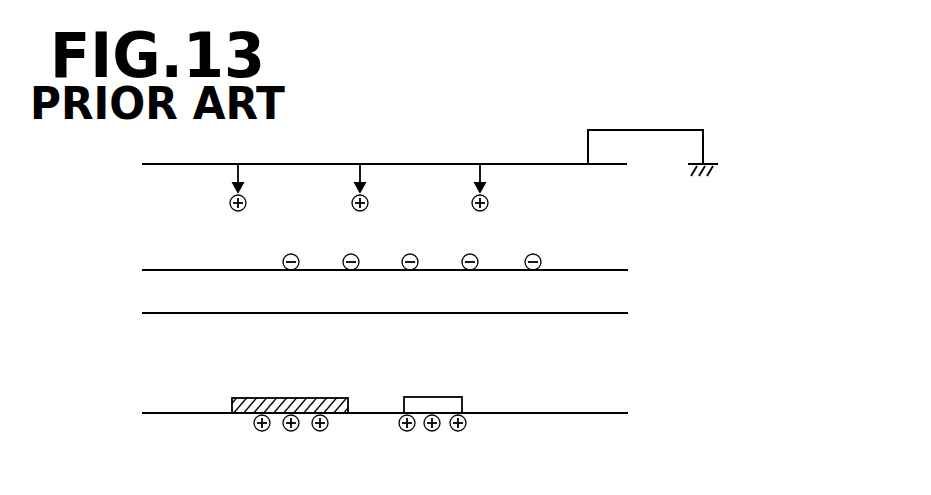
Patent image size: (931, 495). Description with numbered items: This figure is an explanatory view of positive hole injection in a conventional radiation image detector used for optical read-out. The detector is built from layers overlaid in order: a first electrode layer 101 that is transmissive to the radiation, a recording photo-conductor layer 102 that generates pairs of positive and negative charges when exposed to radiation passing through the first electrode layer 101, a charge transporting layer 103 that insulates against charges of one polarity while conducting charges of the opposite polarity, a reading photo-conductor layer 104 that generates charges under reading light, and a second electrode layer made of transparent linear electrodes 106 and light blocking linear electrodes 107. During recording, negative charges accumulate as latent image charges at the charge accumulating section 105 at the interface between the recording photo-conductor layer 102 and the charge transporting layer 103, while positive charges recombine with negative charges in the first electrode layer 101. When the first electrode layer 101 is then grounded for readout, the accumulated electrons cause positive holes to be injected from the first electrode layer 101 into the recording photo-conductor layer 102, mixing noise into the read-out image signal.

The first electrode layer 101 is at (151, 163).
The recording photo-conductor layer 102 is at (152, 201).
The charge transporting layer 103 is at (152, 291).
The reading photo-conductor layer 104 is at (152, 334).
The charge accumulating section 105 is at (172, 267).
The transparent linear electrode 106 is at (455, 400).
The light blocking linear electrode 107 is at (240, 414).